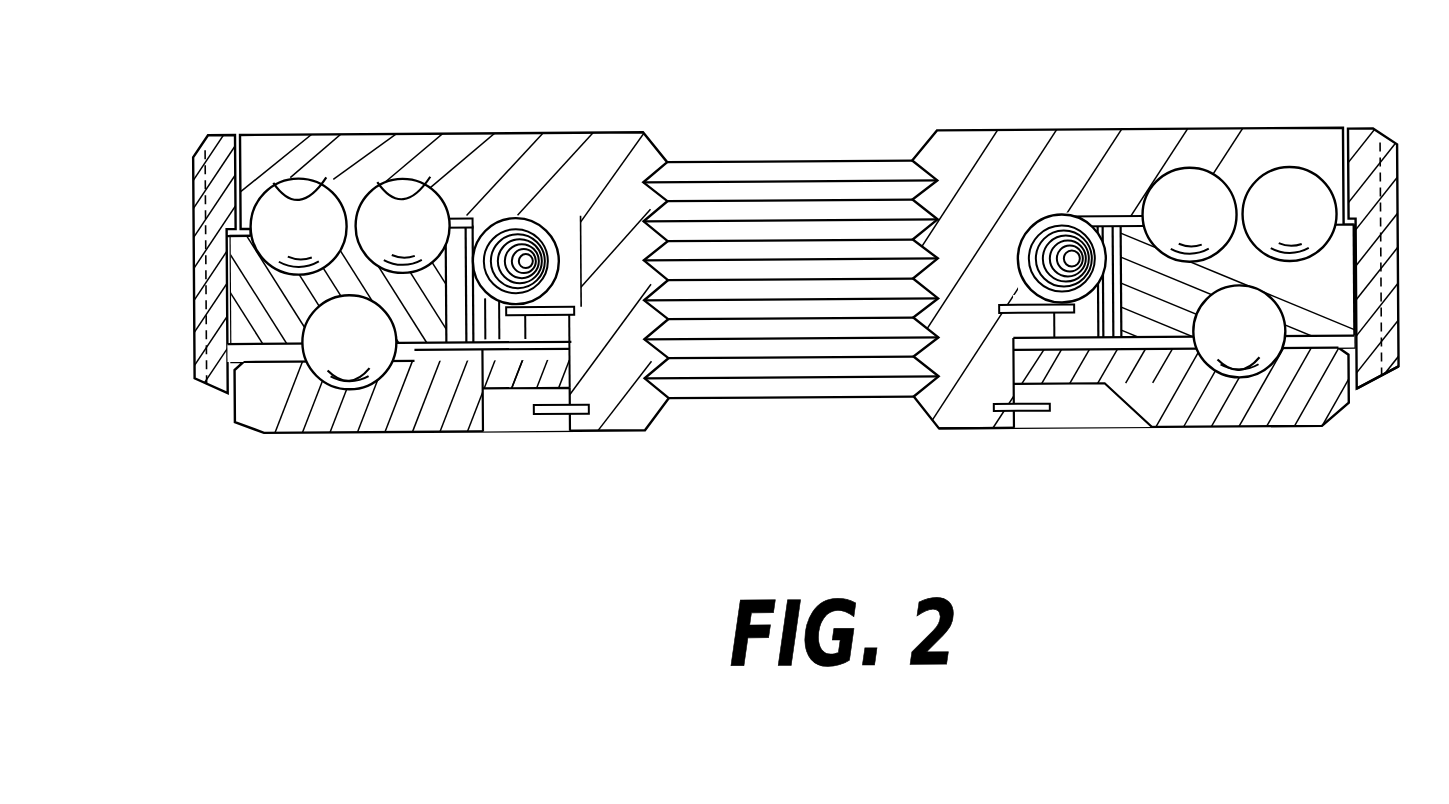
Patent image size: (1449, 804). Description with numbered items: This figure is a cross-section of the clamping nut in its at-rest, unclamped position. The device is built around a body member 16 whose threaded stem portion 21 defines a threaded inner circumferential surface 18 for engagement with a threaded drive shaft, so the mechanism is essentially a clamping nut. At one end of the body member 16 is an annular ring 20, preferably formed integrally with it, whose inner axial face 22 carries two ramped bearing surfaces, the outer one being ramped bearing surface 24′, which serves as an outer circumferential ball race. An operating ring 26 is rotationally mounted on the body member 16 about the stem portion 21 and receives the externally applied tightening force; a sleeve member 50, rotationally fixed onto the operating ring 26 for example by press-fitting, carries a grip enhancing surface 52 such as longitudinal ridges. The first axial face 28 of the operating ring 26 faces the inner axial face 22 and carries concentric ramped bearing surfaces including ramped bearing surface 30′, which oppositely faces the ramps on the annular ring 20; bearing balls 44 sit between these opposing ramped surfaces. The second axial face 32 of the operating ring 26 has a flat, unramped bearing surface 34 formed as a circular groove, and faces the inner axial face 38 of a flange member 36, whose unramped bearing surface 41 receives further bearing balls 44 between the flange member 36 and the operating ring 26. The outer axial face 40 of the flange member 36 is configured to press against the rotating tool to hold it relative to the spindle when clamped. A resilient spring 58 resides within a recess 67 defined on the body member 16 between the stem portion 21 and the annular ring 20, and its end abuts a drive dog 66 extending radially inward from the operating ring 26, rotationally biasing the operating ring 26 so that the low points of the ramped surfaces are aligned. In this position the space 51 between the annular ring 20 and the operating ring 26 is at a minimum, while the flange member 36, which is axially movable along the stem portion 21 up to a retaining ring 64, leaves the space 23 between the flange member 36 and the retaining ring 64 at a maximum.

The body member 16 is at (1011, 133).
The threaded inner circumferential surface 18 is at (805, 174).
The annular ring 20 is at (277, 142).
The threaded stem portion 21 is at (950, 370).
The inner axial face 22 is at (477, 221).
The space 23 is at (1030, 396).
The ramped bearing surface 24′ is at (323, 180).
The operating ring 26 is at (250, 282).
The first axial face 28 is at (1106, 224).
The ramped bearing surface 30′ is at (1272, 240).
The second axial face 32 is at (420, 347).
The unramped bearing surface 34 is at (1240, 292).
The flange member 36 is at (298, 358).
The inner axial face 38 is at (470, 345).
The outer axial face 40 is at (302, 434).
The unramped bearing surface 41 is at (323, 344).
The bearing balls 44 is at (205, 227).
The sleeve member 50 is at (1367, 135).
The space 51 is at (1395, 227).
The grip enhancing surface 52 is at (1395, 366).
The resilient spring 58 is at (525, 265).
The retaining ring 64 is at (552, 417).
The drive dog 66 is at (1007, 309).
The recess 67 is at (556, 222).